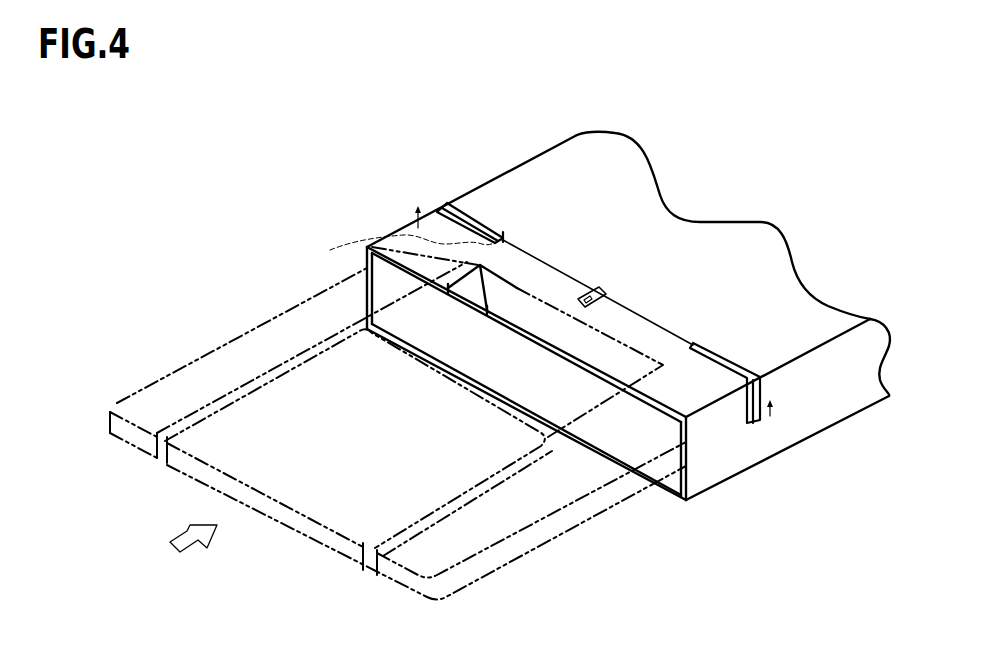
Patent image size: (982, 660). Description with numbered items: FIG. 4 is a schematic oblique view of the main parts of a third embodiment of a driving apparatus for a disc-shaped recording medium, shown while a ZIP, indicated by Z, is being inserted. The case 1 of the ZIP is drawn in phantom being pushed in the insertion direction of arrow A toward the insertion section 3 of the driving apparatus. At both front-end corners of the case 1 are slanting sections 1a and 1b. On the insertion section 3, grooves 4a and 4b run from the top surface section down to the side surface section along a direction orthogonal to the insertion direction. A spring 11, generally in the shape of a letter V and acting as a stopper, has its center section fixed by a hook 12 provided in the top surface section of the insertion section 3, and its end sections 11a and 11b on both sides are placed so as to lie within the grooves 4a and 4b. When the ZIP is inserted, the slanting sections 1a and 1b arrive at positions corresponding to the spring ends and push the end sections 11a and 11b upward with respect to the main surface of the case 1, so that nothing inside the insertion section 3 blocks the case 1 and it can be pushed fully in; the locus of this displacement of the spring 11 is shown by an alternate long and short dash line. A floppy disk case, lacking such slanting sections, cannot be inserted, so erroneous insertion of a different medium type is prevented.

The case 1 is at (200, 378).
The slanting section 1a is at (685, 398).
The slanting section 1b is at (365, 244).
The insertion section 3 is at (790, 292).
The groove 4a is at (749, 376).
The groove 4b is at (437, 205).
The spring 11 is at (578, 288).
The end section of spring 11a is at (693, 343).
The end section of spring 11b is at (430, 237).
The hook 12 is at (599, 290).
The arrow indicating ZIP insertion direction A is at (174, 551).
The ZIP Z is at (503, 552).